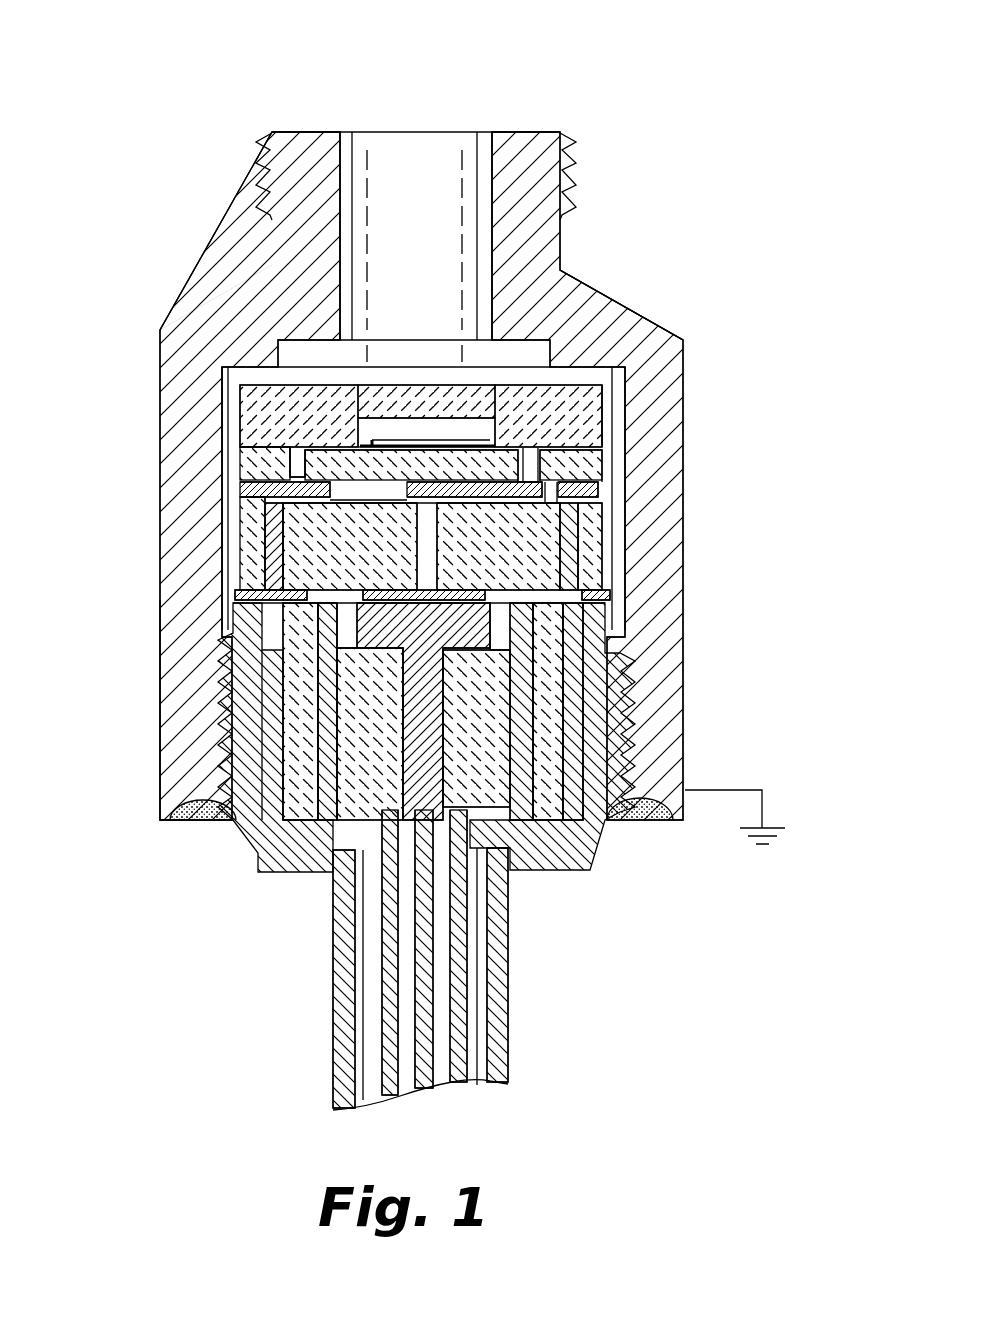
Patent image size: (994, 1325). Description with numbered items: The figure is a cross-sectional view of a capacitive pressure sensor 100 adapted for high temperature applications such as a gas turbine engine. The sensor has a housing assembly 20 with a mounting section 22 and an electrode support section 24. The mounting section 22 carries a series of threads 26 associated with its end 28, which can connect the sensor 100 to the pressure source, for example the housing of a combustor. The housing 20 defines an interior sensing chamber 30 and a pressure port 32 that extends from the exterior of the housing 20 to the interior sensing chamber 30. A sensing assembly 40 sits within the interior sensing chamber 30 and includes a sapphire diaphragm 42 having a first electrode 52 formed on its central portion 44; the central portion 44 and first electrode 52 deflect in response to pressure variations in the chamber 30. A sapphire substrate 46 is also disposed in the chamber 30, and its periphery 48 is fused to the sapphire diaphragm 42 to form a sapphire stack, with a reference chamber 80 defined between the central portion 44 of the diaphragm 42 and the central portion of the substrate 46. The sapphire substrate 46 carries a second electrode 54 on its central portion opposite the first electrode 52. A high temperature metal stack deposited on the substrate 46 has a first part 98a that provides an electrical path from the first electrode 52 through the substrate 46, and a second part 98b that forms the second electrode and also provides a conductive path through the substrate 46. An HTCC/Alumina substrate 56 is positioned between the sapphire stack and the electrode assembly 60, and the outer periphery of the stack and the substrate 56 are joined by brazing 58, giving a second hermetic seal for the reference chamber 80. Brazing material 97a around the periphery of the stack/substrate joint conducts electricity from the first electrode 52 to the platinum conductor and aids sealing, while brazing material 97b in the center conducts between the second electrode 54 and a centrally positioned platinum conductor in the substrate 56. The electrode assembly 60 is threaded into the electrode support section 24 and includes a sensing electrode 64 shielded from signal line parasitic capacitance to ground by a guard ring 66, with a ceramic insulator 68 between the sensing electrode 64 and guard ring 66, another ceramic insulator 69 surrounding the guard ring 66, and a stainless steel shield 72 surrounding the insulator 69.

The capacitive pressure sensor 100 is at (174, 93).
The housing assembly 20 is at (155, 430).
The mounting section 22 is at (238, 192).
The electrode support section 24 is at (208, 748).
The threads 26 is at (578, 182).
The end 28 is at (332, 118).
The interior sensing chamber 30 is at (556, 334).
The pressure port 32 is at (410, 168).
The sensing assembly 40 is at (233, 372).
The sapphire diaphragm 42 is at (488, 400).
The central portion 44 is at (460, 412).
The sapphire substrate 46 is at (336, 470).
The periphery 48 is at (628, 432).
The first electrode 52 is at (433, 428).
The second electrode 54 is at (475, 432).
The HTCC/Alumina substrate 56 is at (598, 560).
The brazing 58 is at (250, 596).
The electrode assembly 60 is at (530, 925).
The sensing electrode 64 is at (457, 632).
The guard ring 66 is at (325, 615).
The ceramic insulator 68 is at (350, 790).
The ceramic insulator 69 is at (300, 802).
The stainless steel shield 72 is at (263, 688).
The reference chamber 80 is at (390, 432).
The brazing material 97a is at (237, 492).
The brazing material 97b is at (506, 510).
The first part of metal stack 98a is at (268, 545).
The second part of metal stack 98b is at (440, 548).